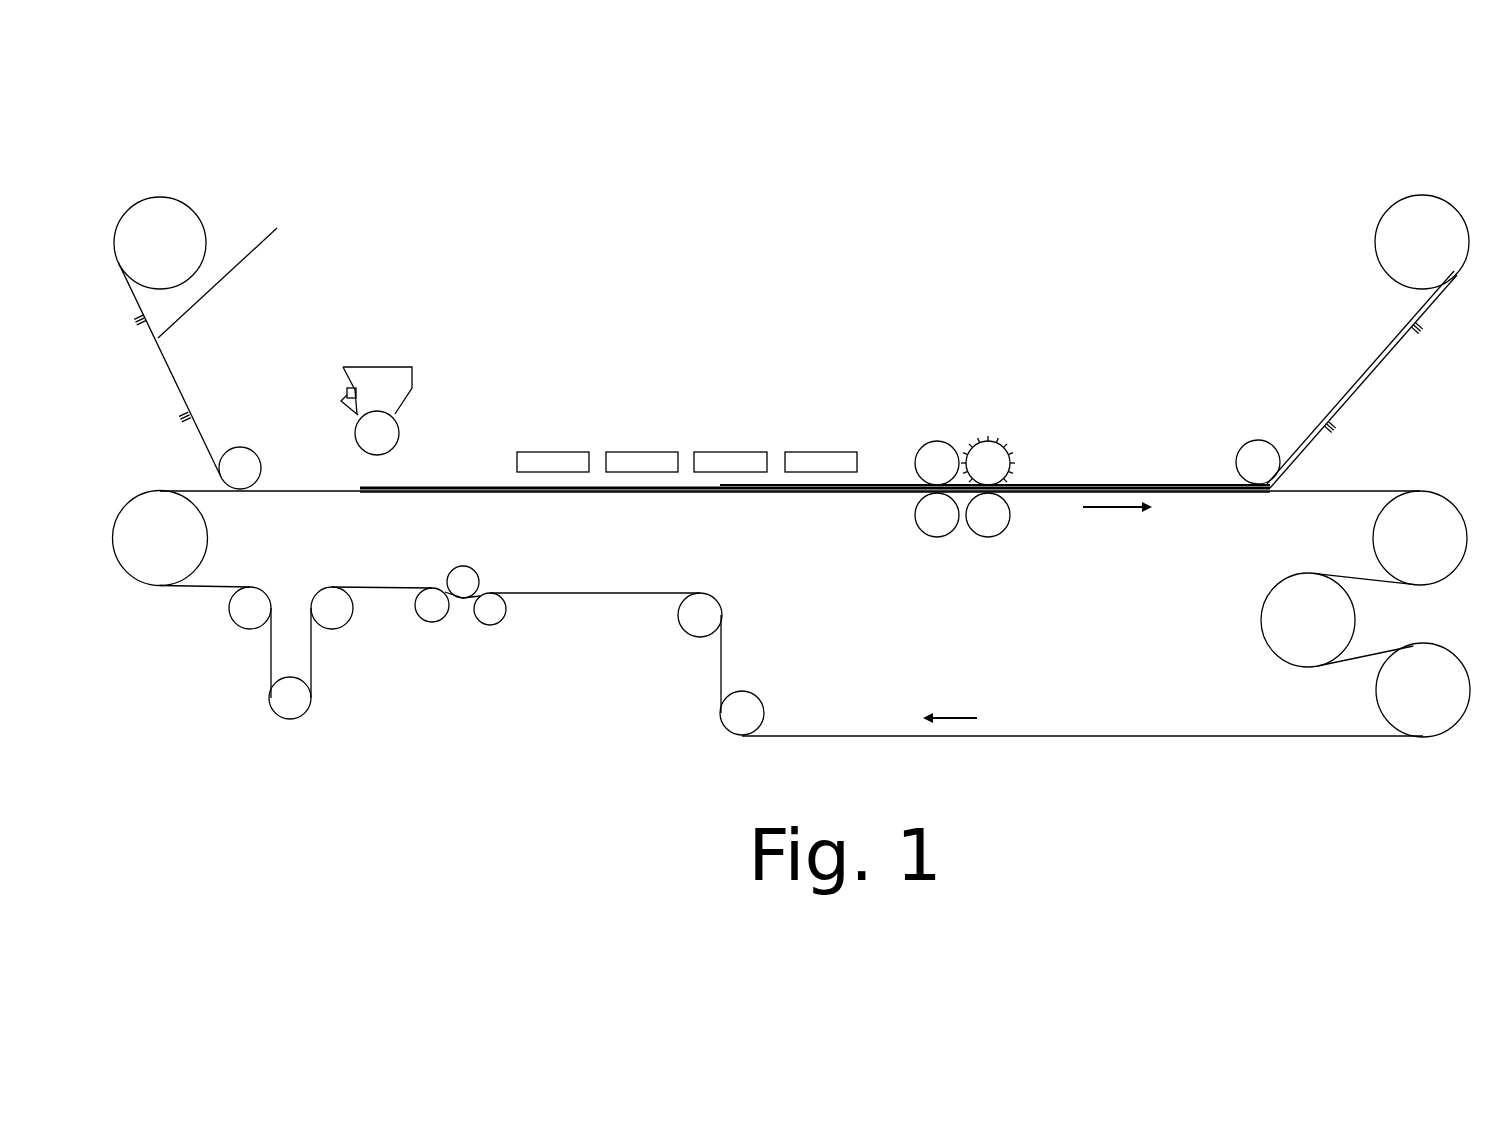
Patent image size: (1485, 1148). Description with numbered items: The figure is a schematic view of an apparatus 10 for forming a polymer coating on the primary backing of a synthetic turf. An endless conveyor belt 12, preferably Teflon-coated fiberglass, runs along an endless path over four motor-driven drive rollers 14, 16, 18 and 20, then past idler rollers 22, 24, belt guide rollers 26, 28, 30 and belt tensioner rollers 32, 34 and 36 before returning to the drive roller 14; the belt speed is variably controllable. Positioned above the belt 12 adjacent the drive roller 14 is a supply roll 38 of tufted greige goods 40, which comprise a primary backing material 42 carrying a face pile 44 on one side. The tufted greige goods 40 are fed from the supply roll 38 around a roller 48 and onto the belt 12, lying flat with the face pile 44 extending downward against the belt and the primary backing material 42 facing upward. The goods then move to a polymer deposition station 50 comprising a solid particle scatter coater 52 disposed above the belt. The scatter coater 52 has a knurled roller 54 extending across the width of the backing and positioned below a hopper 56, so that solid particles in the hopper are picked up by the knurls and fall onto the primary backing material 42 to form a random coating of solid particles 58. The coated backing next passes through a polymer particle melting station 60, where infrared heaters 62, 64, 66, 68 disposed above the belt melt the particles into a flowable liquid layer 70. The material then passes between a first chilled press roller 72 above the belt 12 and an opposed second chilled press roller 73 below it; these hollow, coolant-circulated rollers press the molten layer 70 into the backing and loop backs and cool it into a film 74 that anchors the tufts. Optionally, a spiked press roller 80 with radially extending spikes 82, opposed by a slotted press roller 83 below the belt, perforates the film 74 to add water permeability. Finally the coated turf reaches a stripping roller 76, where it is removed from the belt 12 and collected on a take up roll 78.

The apparatus 10 is at (565, 208).
The endless conveyor belt 12 is at (647, 593).
The drive roller 14 is at (150, 567).
The drive roller 16 is at (1426, 520).
The drive roller 18 is at (1280, 607).
The drive roller 20 is at (1420, 700).
The idler roller 22 is at (737, 715).
The idler roller 24 is at (697, 620).
The belt guide roller 26 is at (490, 612).
The belt guide roller 28 is at (463, 582).
The belt guide roller 30 is at (432, 607).
The belt tensioner roller 32 is at (332, 612).
The belt tensioner roller 34 is at (290, 700).
The belt tensioner roller 36 is at (247, 612).
The supply roll 38 is at (168, 213).
The tufted greige goods 40 is at (198, 455).
The primary backing material 42 is at (232, 271).
The face pile 44 is at (180, 420).
The roller 48 is at (237, 460).
The polymer deposition station 50 is at (362, 507).
The solid particle scatter coater 52 is at (385, 326).
The knurled roller 54 is at (380, 433).
The hopper 56 is at (392, 383).
The coating of solid particles 58 is at (489, 486).
The polymer particle melting station 60 is at (781, 514).
The infrared heater 62 is at (567, 463).
The infrared heater 64 is at (648, 463).
The infrared heater 66 is at (737, 462).
The infrared heater 68 is at (820, 460).
The liquid layer 70 is at (878, 483).
The first chilled press roller 72 is at (936, 458).
The second chilled press roller 73 is at (937, 522).
The film 74 is at (1127, 486).
The stripping roller 76 is at (1250, 455).
The take up roll 78 is at (1405, 235).
The spiked press roller 80 is at (986, 458).
The spikes 82 is at (1005, 448).
The slotted press roller 83 is at (993, 520).